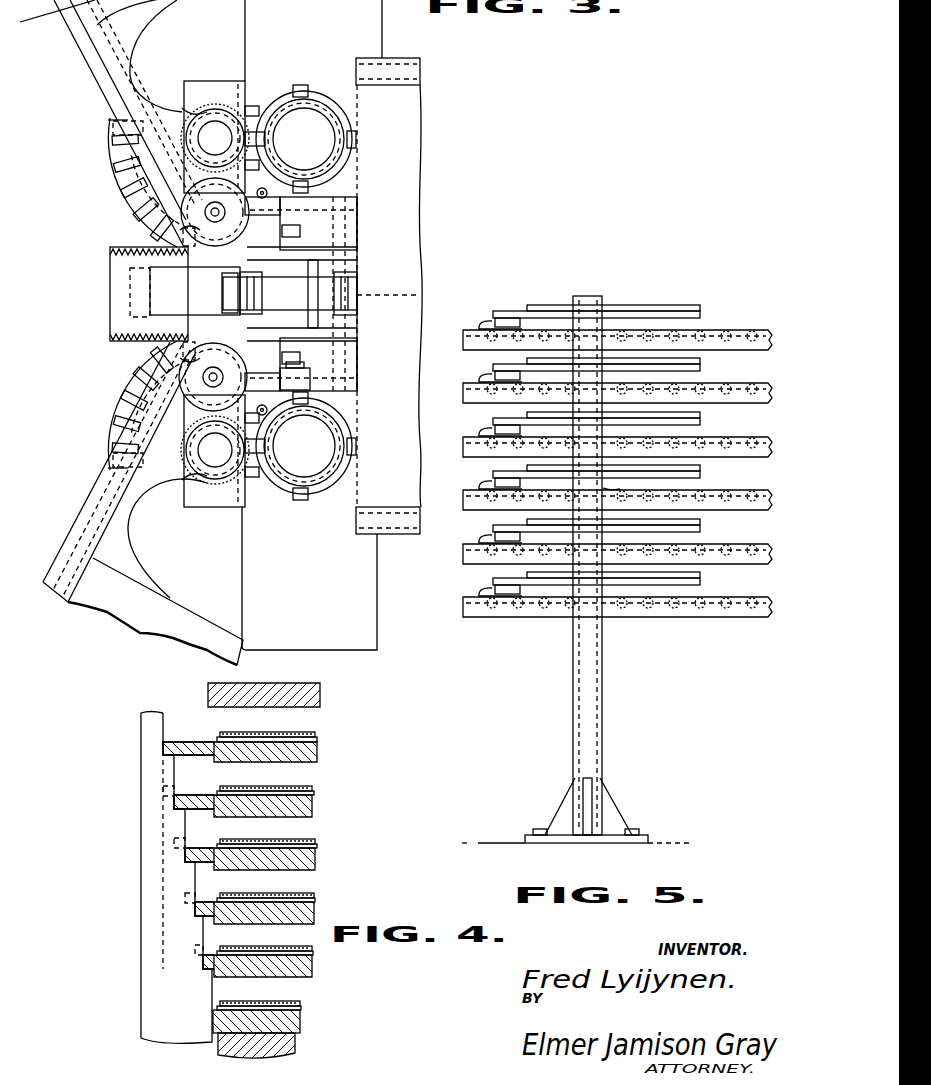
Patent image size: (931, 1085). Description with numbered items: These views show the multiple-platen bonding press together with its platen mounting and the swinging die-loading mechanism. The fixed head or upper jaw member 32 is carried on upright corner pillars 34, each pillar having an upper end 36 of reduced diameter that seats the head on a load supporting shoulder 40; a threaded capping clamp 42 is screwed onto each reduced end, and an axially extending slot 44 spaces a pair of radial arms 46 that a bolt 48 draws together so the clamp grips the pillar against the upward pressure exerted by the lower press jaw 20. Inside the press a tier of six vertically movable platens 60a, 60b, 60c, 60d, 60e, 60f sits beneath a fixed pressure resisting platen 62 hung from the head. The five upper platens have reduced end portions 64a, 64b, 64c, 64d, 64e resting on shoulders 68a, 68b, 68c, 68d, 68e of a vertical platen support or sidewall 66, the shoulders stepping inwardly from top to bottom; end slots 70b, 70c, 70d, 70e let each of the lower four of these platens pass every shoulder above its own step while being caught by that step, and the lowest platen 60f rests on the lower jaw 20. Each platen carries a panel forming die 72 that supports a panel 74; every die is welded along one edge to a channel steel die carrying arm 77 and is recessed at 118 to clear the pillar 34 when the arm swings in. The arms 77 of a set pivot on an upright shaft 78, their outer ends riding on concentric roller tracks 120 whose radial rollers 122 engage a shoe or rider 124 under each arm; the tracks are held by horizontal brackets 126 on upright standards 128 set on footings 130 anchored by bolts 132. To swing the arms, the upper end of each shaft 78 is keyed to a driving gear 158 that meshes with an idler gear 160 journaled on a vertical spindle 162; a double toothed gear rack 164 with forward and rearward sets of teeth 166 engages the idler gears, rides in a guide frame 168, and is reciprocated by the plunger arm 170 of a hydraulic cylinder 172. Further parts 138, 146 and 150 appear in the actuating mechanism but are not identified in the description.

In FIG. 4, the lower press jaw 20 is at (295, 1045).
In FIG. 3, the pressure resisting upper jaw member 32 is at (421, 238).
In FIG. 3, the upright corner pillar 34 is at (340, 126).
In FIG. 3, the reduced pillar extension 36 is at (304, 292).
In FIG. 3, the load supporting shoulder 40 is at (292, 90).
In FIG. 3, the threaded capping clamp 42 is at (318, 93).
In FIG. 3, the axially extending slot 44 is at (304, 292).
In FIG. 3, the radially extending arms 46 is at (262, 120).
In FIG. 3, the bolt 48 is at (243, 110).
In FIG. 4, the movable platen 60a is at (317, 752).
In FIG. 4, the movable platen 60b is at (312, 806).
In FIG. 4, the movable platen 60c is at (315, 860).
In FIG. 4, the movable platen 60d is at (314, 912).
In FIG. 4, the movable platen 60e is at (312, 968).
In FIG. 4, the movable platen 60f is at (300, 1022).
In FIG. 4, the fixed pressure resisting platen 62 is at (320, 700).
In FIG. 4, the reduced end portion 64a is at (190, 742).
In FIG. 4, the reduced end portion 64b is at (200, 795).
In FIG. 4, the reduced end portion 64c is at (205, 848).
In FIG. 4, the reduced end portion 64d is at (210, 902).
In FIG. 4, the reduced end portion 64e is at (212, 955).
In FIG. 4, the platen support 66 is at (141, 818).
In FIG. 4, the shoulder 68a is at (163, 752).
In FIG. 4, the shoulder 68b is at (174, 812).
In FIG. 4, the shoulder 68c is at (185, 864).
In FIG. 4, the shoulder 68d is at (195, 918).
In FIG. 4, the shoulder 68e is at (203, 970).
In FIG. 4, the end slot 70b is at (163, 790).
In FIG. 4, the end slot 70c is at (174, 843).
In FIG. 4, the end slot 70d is at (185, 898).
In FIG. 4, the end slot 70e is at (195, 950).
In FIG. 3, the panel forming die 72 is at (421, 68).
In FIG. 5, the panel forming die 72 is at (700, 320).
In FIG. 4, the panel forming die 72 is at (317, 739).
In FIG. 3, the panel 74 is at (55, 10).
In FIG. 5, the panel 74 is at (650, 306).
In FIG. 4, the panel 74 is at (315, 732).
In FIG. 3, the die carrying arm 77 is at (95, 44).
In FIG. 5, the die carrying arm 77 is at (492, 318).
In FIG. 3, the pivotal shaft 78 is at (215, 294).
In FIG. 3, the recess 118 is at (132, 58).
In FIG. 5, the roller type track 120 is at (463, 340).
In FIG. 5, the rollers 122 is at (730, 405).
In FIG. 5, the shoe 124 is at (478, 324).
In FIG. 5, the horizontal bracket 126 is at (618, 490).
In FIG. 5, the upright standard 128 is at (603, 722).
In FIG. 5, the footing 130 is at (540, 830).
In FIG. 5, the bolts 132 is at (632, 830).
In FIG. 3, the curved rack segment 138 is at (110, 178).
In FIG. 3, the rack teeth 146 is at (118, 176).
In FIG. 3, the pawl 150 is at (182, 236).
In FIG. 3, the driving gear 158 is at (185, 110).
In FIG. 3, the idler gear 160 is at (232, 360).
In FIG. 3, the vertical spindle 162 is at (260, 198).
In FIG. 3, the double toothed gear rack 164 is at (110, 300).
In FIG. 3, the sets of teeth 166 is at (112, 256).
In FIG. 3, the guide frame 168 is at (110, 249).
In FIG. 3, the plunger arm 170 is at (157, 292).
In FIG. 3, the hydraulic cylinder 172 is at (285, 296).